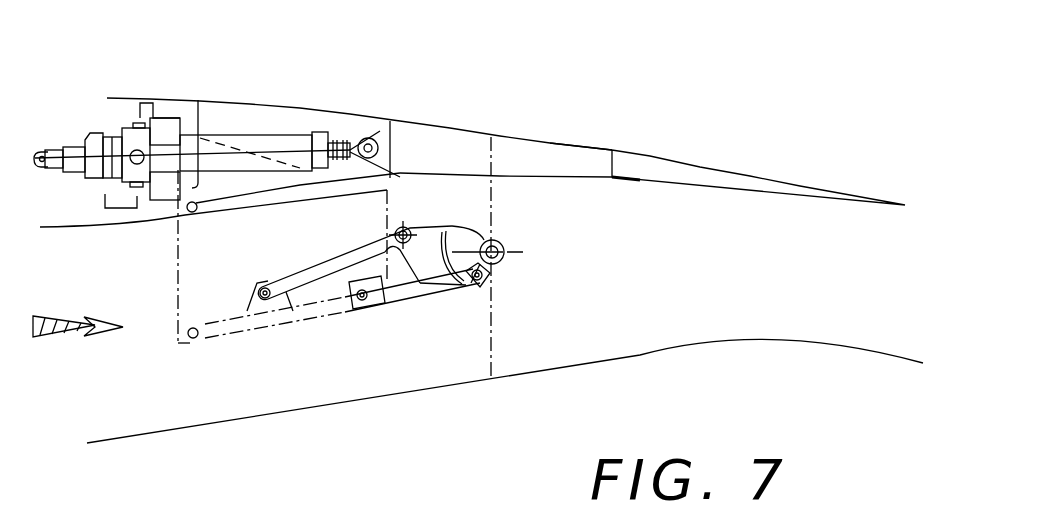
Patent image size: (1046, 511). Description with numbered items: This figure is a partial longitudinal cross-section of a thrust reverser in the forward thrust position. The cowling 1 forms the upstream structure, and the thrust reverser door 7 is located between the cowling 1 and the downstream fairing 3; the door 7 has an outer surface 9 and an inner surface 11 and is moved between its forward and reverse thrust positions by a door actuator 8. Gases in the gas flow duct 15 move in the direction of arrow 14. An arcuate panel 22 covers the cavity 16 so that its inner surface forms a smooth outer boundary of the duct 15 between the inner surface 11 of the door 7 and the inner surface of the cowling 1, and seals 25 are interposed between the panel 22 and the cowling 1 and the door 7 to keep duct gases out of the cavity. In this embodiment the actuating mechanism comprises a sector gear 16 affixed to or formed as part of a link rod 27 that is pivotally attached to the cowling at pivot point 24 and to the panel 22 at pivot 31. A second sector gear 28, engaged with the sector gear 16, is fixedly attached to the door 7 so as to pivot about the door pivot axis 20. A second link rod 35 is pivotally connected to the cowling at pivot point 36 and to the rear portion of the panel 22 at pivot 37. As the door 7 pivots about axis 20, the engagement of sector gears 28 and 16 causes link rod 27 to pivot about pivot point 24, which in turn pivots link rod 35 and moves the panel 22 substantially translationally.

The cowling 1 is at (128, 97).
The downstream fairing 3 is at (723, 170).
The thrust reverser door 7 is at (517, 108).
The door actuator 8 is at (260, 143).
The outer surface 9 is at (577, 140).
The inner surface 11 is at (545, 167).
The arrow 14 is at (78, 345).
The gas flow duct 15 is at (787, 262).
The sector gear 16 is at (453, 228).
The door pivot axis 20 is at (503, 267).
The panel 22 is at (250, 204).
The pivot point 24 is at (407, 226).
The seals 25 is at (191, 209).
The link rod 27 is at (310, 268).
The second sector gear 28 is at (480, 241).
The pivot 31 is at (265, 281).
The second link rod 35 is at (437, 283).
The pivot point 36 is at (480, 280).
The pivot 37 is at (367, 307).